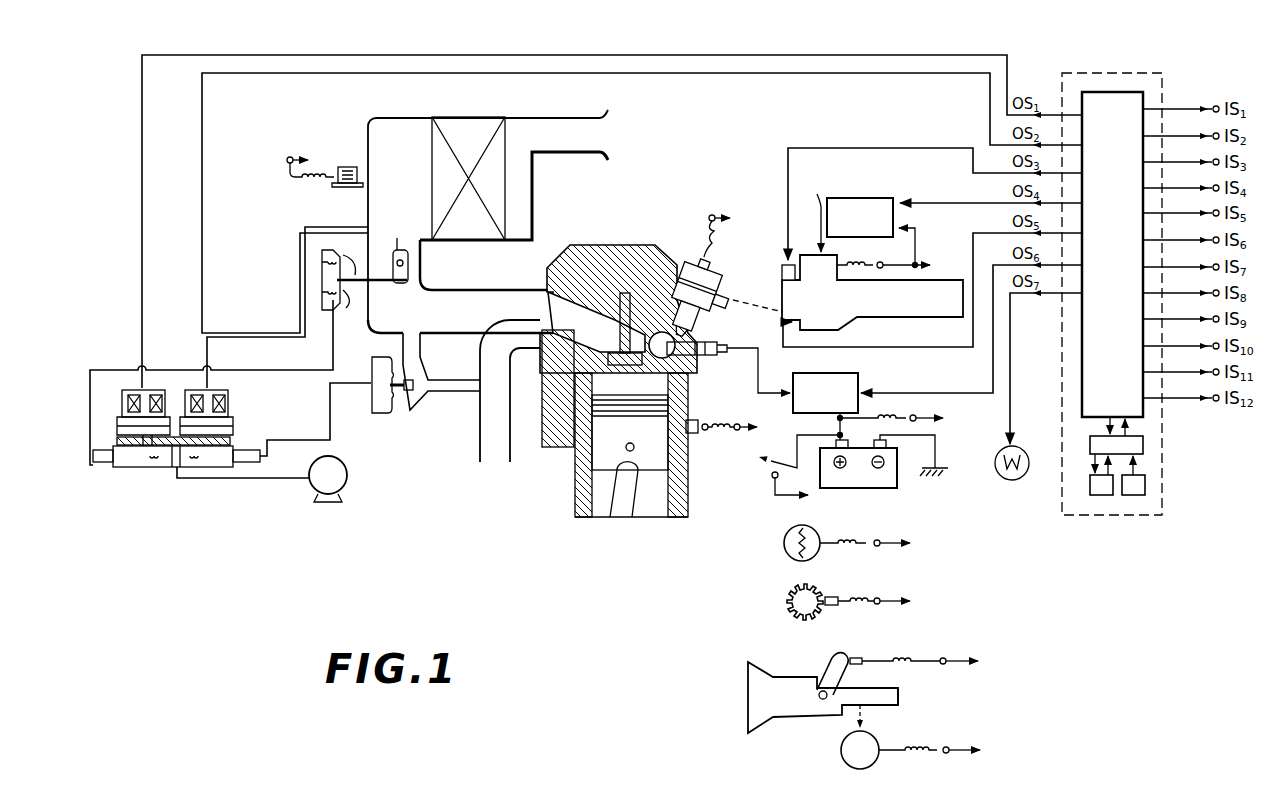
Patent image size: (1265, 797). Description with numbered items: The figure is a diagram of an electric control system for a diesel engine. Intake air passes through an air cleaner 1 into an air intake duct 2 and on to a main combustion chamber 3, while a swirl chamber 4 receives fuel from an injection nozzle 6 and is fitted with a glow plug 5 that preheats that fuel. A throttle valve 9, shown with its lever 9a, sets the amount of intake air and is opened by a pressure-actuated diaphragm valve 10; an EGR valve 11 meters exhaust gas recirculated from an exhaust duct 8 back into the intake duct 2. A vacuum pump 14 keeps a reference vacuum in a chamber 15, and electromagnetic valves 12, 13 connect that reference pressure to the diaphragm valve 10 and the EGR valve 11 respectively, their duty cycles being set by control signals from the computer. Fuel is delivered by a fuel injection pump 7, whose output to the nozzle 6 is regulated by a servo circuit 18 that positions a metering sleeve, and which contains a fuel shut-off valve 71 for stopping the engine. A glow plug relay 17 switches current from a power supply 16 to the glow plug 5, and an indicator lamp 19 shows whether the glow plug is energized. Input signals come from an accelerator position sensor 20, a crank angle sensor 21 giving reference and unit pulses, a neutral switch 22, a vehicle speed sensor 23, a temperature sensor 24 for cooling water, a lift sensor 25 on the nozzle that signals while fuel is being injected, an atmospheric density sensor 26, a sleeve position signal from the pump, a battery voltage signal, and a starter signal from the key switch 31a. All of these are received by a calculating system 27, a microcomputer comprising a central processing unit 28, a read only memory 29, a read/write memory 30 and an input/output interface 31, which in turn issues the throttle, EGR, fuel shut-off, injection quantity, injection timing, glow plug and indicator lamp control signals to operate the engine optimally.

The air cleaner 1 is at (505, 140).
The air intake duct 2 is at (421, 255).
The main combustion chamber 3 is at (650, 385).
The swirl chamber 4 is at (687, 378).
The glow plug 5 is at (718, 343).
The injection nozzle 6 is at (722, 284).
The fuel injection pump 7 is at (918, 317).
The fuel shut-off valve 71 is at (781, 270).
The exhaust duct 8 is at (498, 452).
The throttle valve 9 is at (397, 238).
The throttle valve lever 9a is at (362, 260).
The diaphragm valve 10 is at (345, 296).
The EGR valve 11 is at (407, 414).
The electromagnetic valve 12 is at (124, 406).
The electromagnetic valve 13 is at (228, 404).
The vacuum pump 14 is at (318, 490).
The chamber 15 is at (139, 468).
The power supply 16 is at (892, 488).
The glow plug relay 17 is at (858, 379).
The servo circuit 18 is at (862, 198).
The indicator lamp 19 is at (1028, 474).
The accelerator position sensor 20 is at (812, 527).
The crank angle sensor 21 is at (828, 597).
The neutral switch 22 is at (868, 653).
The vehicle speed sensor 23 is at (882, 740).
The temperature sensor 24 is at (700, 433).
The lift sensor 25 is at (709, 262).
The atmospheric density sensor 26 is at (350, 193).
The calculating system 27 is at (1113, 515).
The central processing unit 28 is at (1143, 446).
The read only memory 29 is at (1145, 484).
The read/write memory 30 is at (1100, 495).
The input/output interface 31 is at (1112, 92).
The key or starter switch 31a is at (796, 470).